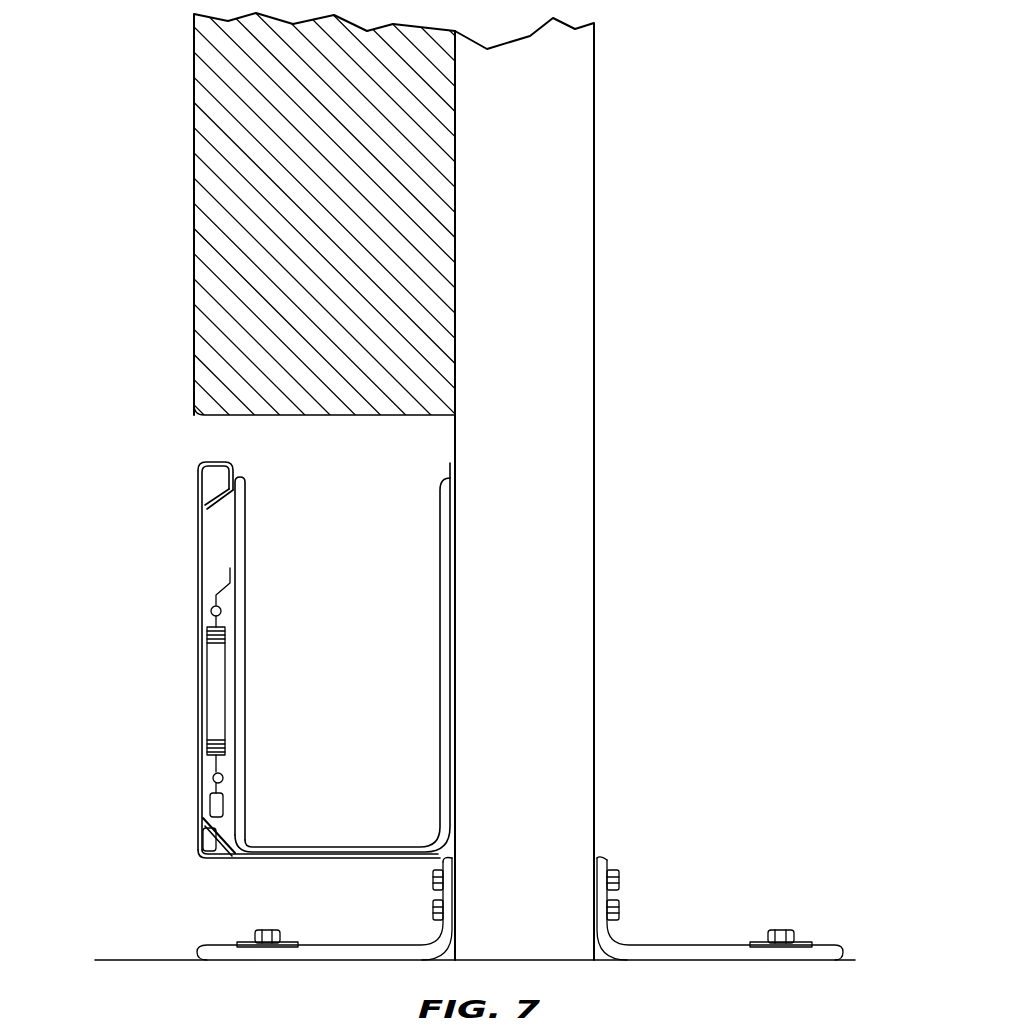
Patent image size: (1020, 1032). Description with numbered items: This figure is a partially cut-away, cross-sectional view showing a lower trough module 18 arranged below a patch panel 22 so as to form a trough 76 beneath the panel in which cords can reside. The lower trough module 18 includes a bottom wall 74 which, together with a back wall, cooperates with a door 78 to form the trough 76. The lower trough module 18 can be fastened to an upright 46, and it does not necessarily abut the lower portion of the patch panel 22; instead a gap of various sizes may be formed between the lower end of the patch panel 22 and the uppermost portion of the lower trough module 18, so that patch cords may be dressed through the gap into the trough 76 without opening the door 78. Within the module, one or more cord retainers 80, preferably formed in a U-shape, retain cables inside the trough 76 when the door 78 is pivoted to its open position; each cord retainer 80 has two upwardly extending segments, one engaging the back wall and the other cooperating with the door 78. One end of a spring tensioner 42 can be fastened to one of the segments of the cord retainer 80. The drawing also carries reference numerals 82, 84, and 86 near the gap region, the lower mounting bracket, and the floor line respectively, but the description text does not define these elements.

The lower trough module 18 is at (249, 645).
The patch panel 22 is at (262, 234).
The spring tensioner 42 is at (215, 662).
The upright 46 is at (597, 583).
The bottom wall 74 is at (274, 861).
The trough 76 is at (362, 555).
The door 78 is at (218, 512).
The cord retainer 80 is at (247, 512).
The gap 82 is at (262, 606).
The bracket 84 is at (393, 945).
The floor 86 is at (155, 960).